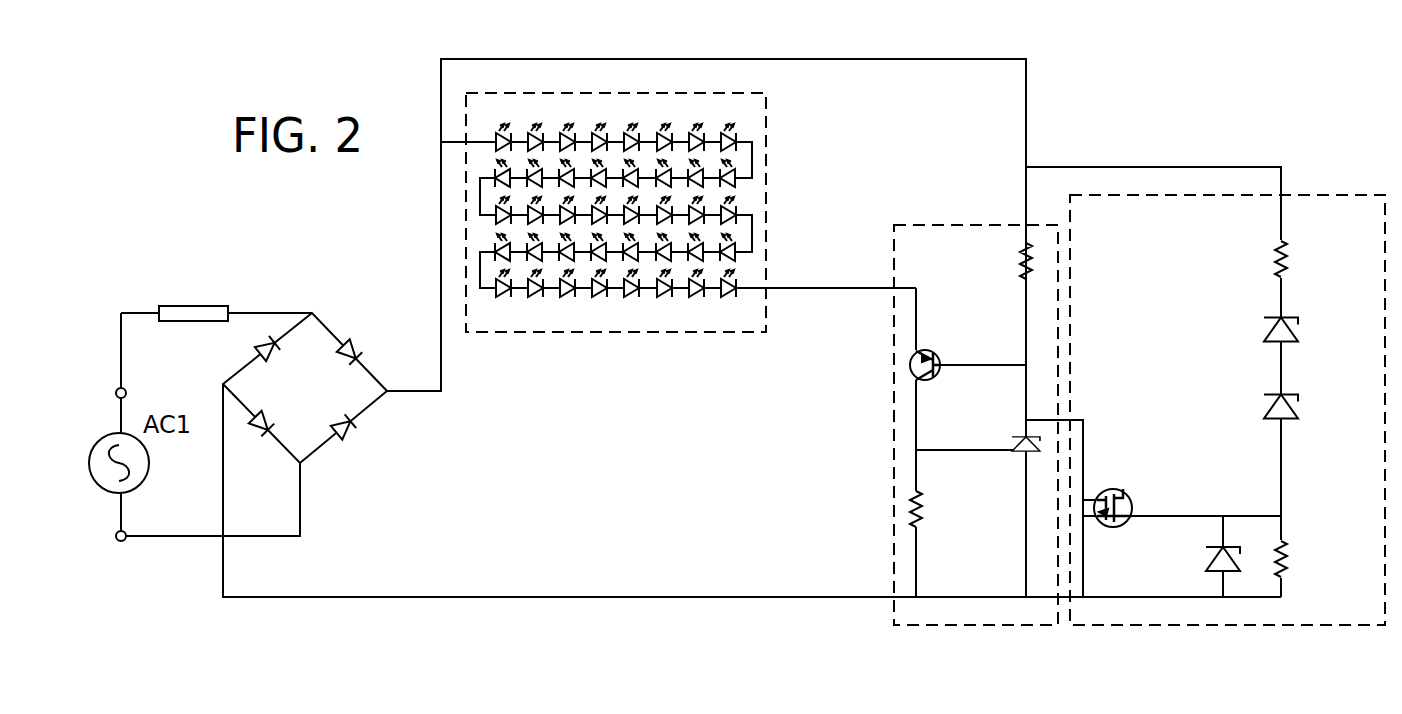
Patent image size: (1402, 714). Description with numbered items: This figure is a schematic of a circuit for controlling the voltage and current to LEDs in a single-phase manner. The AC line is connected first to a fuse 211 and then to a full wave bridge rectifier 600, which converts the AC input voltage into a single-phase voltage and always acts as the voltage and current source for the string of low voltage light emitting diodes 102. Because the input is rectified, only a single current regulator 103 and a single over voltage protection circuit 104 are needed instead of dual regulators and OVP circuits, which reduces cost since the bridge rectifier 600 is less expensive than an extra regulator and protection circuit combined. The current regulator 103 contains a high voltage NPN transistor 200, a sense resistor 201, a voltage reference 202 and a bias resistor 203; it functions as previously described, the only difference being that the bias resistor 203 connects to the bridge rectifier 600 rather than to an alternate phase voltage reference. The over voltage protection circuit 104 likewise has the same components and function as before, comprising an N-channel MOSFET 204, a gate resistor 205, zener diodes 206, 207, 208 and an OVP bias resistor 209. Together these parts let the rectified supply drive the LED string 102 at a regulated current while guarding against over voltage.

The string of light emitting diodes 102 is at (762, 203).
The current regulator 103 is at (895, 628).
The over voltage protection circuit 104 is at (1138, 627).
The high voltage NPN transistor 200 is at (928, 352).
The sense resistor 201 is at (925, 508).
The voltage reference 202 is at (1017, 433).
The bias resistor 203 is at (1013, 264).
The N-channel MOSFET 204 is at (1103, 490).
The gate resistor 205 is at (1293, 567).
The zener diode 206 is at (1207, 557).
The zener diode 207 is at (1297, 408).
The zener diode 208 is at (1295, 332).
The OVP bias resistor 209 is at (1293, 257).
The fuse 211 is at (195, 303).
The bridge rectifier 600 is at (381, 432).